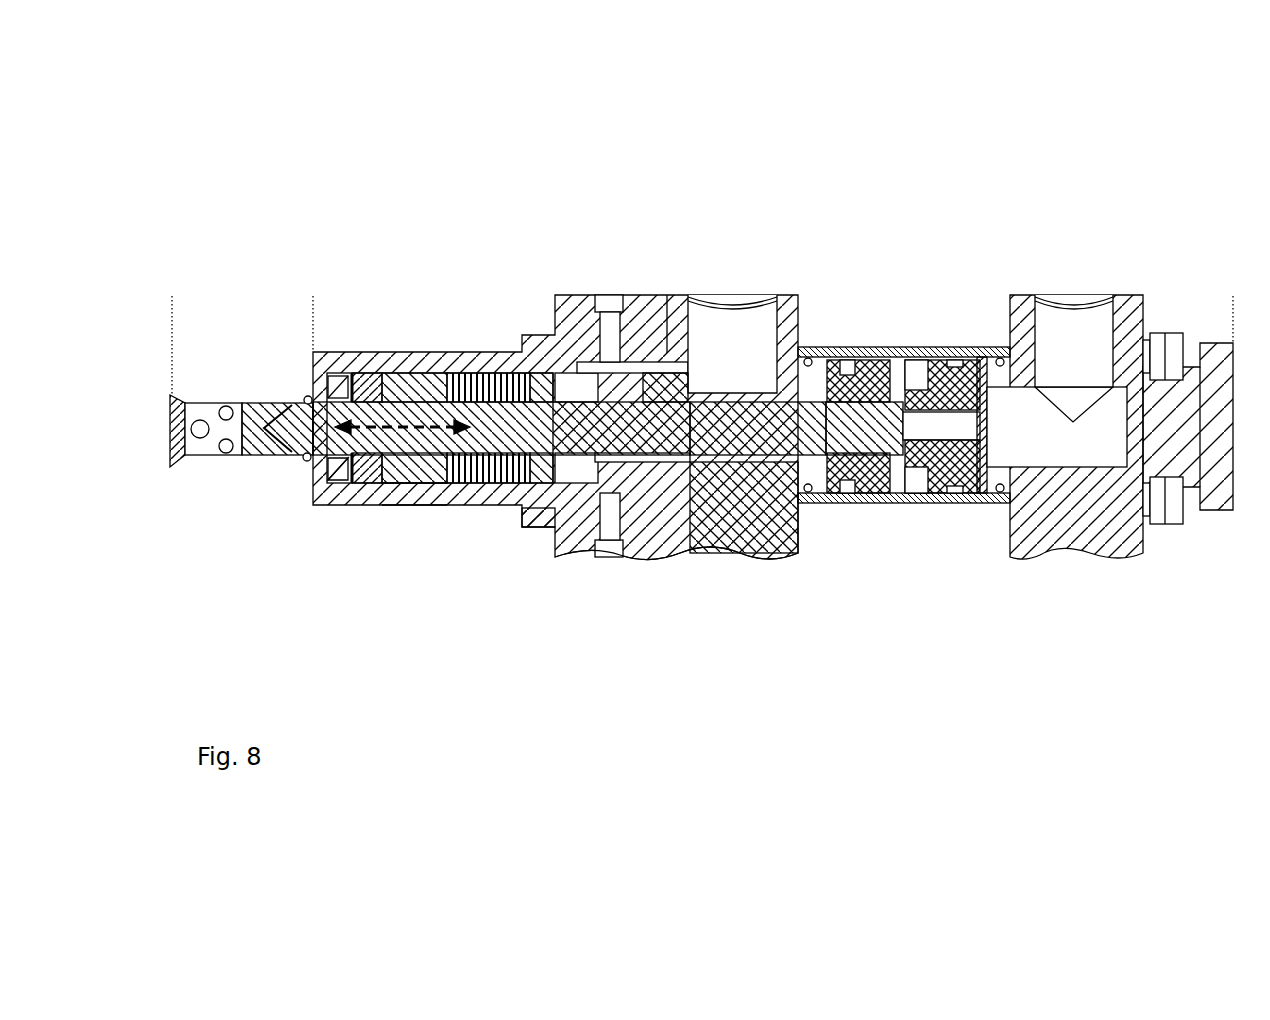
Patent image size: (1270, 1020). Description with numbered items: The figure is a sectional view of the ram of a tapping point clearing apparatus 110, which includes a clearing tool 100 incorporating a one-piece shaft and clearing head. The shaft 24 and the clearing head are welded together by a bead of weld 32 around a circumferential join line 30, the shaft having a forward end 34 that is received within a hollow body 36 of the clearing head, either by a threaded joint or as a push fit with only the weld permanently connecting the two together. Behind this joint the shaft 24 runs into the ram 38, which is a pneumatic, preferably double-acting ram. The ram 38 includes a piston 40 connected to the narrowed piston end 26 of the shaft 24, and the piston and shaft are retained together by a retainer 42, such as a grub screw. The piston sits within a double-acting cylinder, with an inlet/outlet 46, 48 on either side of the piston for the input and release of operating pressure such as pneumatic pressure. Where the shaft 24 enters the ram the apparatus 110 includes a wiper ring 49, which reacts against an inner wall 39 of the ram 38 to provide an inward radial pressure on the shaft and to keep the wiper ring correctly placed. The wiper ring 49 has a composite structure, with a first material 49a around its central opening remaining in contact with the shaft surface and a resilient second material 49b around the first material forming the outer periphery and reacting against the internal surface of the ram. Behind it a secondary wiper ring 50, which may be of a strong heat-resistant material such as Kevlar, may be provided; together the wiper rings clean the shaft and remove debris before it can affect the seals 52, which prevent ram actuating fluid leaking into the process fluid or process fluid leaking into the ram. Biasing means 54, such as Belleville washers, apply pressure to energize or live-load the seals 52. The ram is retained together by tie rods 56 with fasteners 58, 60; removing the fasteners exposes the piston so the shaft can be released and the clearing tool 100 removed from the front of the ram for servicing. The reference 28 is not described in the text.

The tapping point clearing apparatus 110 is at (185, 405).
The forward end 34 is at (270, 408).
The hollow body 36 is at (287, 406).
The bead of weld 32 is at (308, 402).
The wiper ring 49 is at (339, 378).
The first material 49a is at (318, 472).
The second material 49b is at (338, 483).
The piston rod 28 is at (368, 408).
The ram 38 is at (572, 318).
The inlet/outlet 46 is at (718, 315).
The shaft 24 is at (788, 412).
The narrowed piston end 26 is at (868, 428).
The retainer 42 is at (887, 397).
The piston 40 is at (958, 393).
The inlet/outlet 48 is at (1062, 300).
The circumferential join line 30 is at (300, 460).
The secondary wiper ring 50 is at (365, 475).
The seal 52 is at (417, 477).
The inner wall 39 is at (424, 483).
The biasing means 54 is at (480, 480).
The fastener 60 is at (539, 512).
The clearing tool 100 is at (710, 598).
The fastener 58 is at (1165, 520).
The tie rod 56 is at (1202, 500).